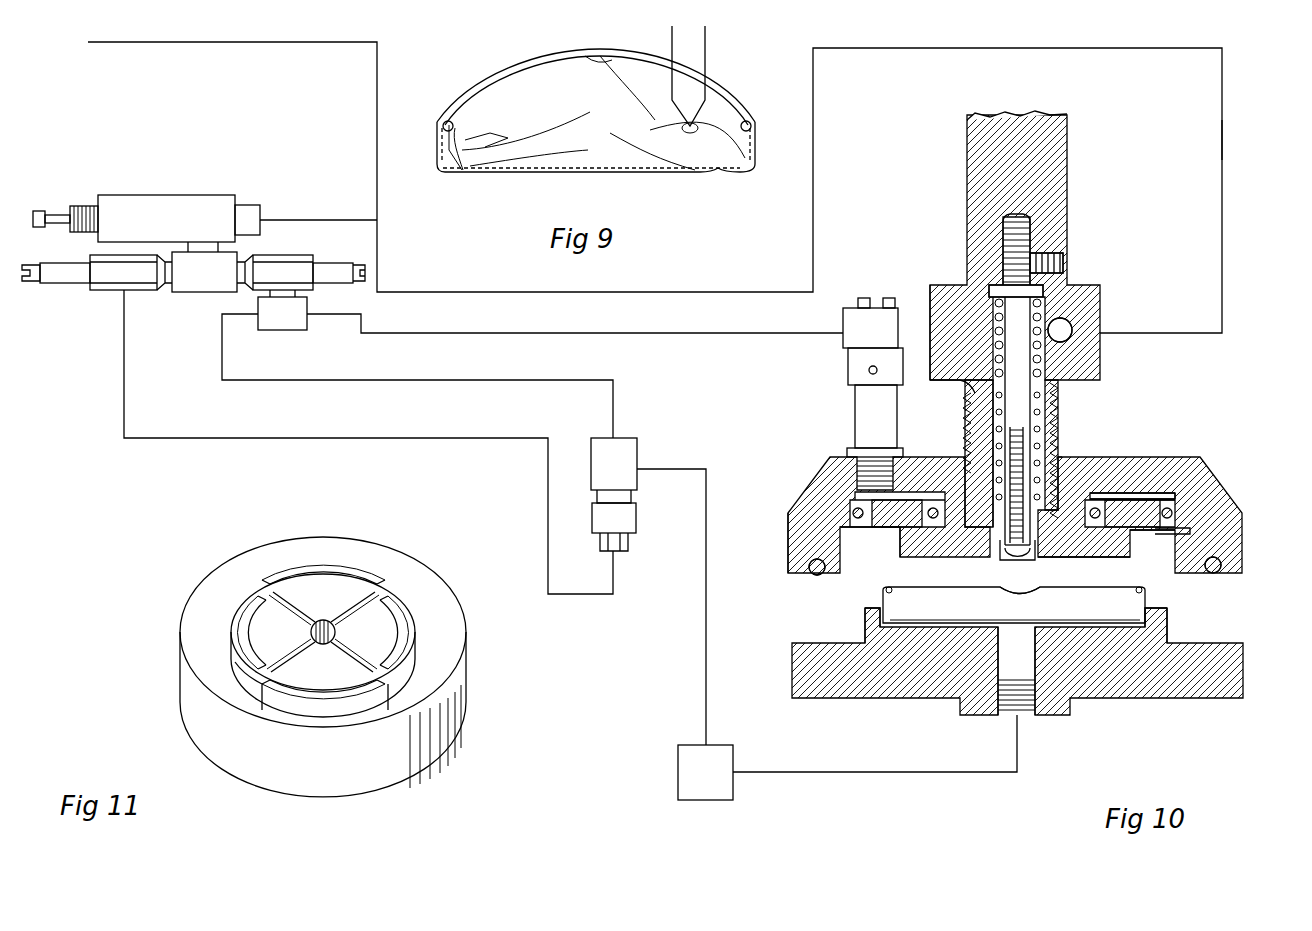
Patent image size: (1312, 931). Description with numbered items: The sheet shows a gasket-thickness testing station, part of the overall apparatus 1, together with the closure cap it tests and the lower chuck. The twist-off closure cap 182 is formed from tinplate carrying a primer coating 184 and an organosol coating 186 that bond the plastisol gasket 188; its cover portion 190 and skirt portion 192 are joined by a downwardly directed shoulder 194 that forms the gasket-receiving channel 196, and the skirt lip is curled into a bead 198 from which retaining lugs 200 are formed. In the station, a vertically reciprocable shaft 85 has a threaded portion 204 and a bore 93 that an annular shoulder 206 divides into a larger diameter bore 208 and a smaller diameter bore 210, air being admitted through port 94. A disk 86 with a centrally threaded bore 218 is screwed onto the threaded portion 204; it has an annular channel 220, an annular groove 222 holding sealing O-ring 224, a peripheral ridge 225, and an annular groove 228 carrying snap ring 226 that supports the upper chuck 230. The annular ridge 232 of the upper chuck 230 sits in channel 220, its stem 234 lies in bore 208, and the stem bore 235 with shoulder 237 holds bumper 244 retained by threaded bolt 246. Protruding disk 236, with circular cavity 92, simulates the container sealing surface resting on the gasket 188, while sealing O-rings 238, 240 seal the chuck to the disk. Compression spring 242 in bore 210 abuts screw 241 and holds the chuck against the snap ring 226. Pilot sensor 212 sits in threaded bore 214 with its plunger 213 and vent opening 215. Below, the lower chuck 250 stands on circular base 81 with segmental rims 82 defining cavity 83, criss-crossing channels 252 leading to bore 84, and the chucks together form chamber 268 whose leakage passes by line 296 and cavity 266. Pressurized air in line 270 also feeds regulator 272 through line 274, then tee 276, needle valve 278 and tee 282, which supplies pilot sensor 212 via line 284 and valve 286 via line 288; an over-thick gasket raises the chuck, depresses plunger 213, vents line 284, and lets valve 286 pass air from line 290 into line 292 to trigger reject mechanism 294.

In FIG. 10, the hydraulic press apparatus 1 is at (1222, 146).
In FIG. 10, the circular base 81 is at (1200, 648).
In FIG. 11, the circular base 81 is at (450, 655).
In FIG. 11, the segmental rims 82 is at (395, 590).
In FIG. 10, the cavity 83 is at (1150, 610).
In FIG. 10, the bore 84 is at (1020, 705).
In FIG. 11, the bore 84 is at (345, 642).
In FIG. 10, the shaft 85 is at (1067, 182).
In FIG. 10, the disk 86 is at (1205, 475).
In FIG. 10, the circular cavity 92 is at (1080, 557).
In FIG. 10, the bore 93 is at (1040, 314).
In FIG. 10, the port 94 is at (1072, 326).
In FIG. 10, the closure cap 182 is at (883, 603).
In FIG. 9, the primer coating 184 is at (458, 108).
In FIG. 9, the organosol coating 186 is at (498, 74).
In FIG. 9, the plastisol gasket 188 is at (622, 106).
In FIG. 10, the plastisol gasket 188 is at (1132, 622).
In FIG. 9, the cover portion 190 is at (576, 170).
In FIG. 9, the skirt portion 192 is at (755, 122).
In FIG. 9, the shoulder 194 is at (475, 172).
In FIG. 9, the gasket-receiving channel 196 is at (724, 173).
In FIG. 9, the bead 198 is at (720, 86).
In FIG. 9, the retaining lugs 200 is at (592, 55).
In FIG. 10, the threaded portion 204 is at (1062, 455).
In FIG. 10, the annular shoulder 206 is at (1062, 398).
In FIG. 10, the larger diameter bore 208 is at (965, 420).
In FIG. 10, the smaller diameter bore 210 is at (930, 300).
In FIG. 10, the pilot sensor 212 is at (848, 368).
In FIG. 10, the plunger 213 is at (857, 470).
In FIG. 10, the threaded bore 214 is at (852, 455).
In FIG. 10, the opening 215 is at (869, 368).
In FIG. 10, the centrally threaded bore 218 is at (1135, 500).
In FIG. 10, the annular channel 220 is at (1168, 500).
In FIG. 10, the annular groove 222 is at (788, 556).
In FIG. 10, the sealing O-ring 224 is at (812, 575).
In FIG. 10, the peripheral ridge 225 is at (1221, 573).
In FIG. 10, the snap ring 226 is at (1180, 518).
In FIG. 10, the annular groove 228 is at (1192, 531).
In FIG. 10, the upper chuck 230 is at (1178, 494).
In FIG. 10, the annular ridge 232 is at (1140, 493).
In FIG. 10, the stem 234 is at (1060, 420).
In FIG. 10, the bore 235 is at (993, 410).
In FIG. 10, the disk 236 is at (898, 557).
In FIG. 10, the shoulder 237 is at (967, 440).
In FIG. 10, the sealing O-ring 238 is at (930, 508).
In FIG. 10, the sealing O-ring 240 is at (860, 495).
In FIG. 10, the screw 241 is at (1030, 248).
In FIG. 10, the compression spring 242 is at (1052, 297).
In FIG. 10, the bumper 244 is at (1033, 560).
In FIG. 10, the threaded bolt 246 is at (1005, 560).
In FIG. 10, the lower chuck 250 is at (1177, 625).
In FIG. 11, the lower chuck 250 is at (430, 592).
In FIG. 11, the channels 252 is at (280, 650).
In FIG. 10, the cavity 266 is at (1150, 533).
In FIG. 10, the chamber 268 is at (896, 549).
In FIG. 10, the line 270 is at (900, 48).
In FIG. 10, the pressure regulator 272 is at (200, 188).
In FIG. 10, the line 274 is at (308, 222).
In FIG. 10, the tee 276 is at (200, 298).
In FIG. 10, the needle valve 278 is at (90, 283).
In FIG. 10, the tee 282 is at (330, 262).
In FIG. 10, the line 284 is at (518, 333).
In FIG. 10, the valve 286 is at (637, 450).
In FIG. 10, the line 288 is at (613, 404).
In FIG. 10, the line 290 is at (124, 396).
In FIG. 10, the line 292 is at (706, 644).
In FIG. 10, the reject mechanism 294 is at (733, 757).
In FIG. 10, the line 296 is at (856, 772).